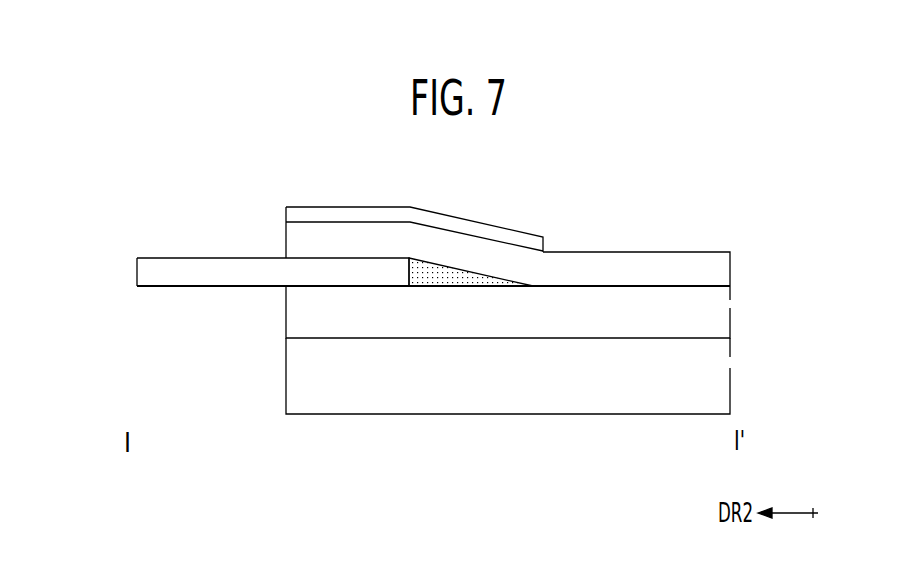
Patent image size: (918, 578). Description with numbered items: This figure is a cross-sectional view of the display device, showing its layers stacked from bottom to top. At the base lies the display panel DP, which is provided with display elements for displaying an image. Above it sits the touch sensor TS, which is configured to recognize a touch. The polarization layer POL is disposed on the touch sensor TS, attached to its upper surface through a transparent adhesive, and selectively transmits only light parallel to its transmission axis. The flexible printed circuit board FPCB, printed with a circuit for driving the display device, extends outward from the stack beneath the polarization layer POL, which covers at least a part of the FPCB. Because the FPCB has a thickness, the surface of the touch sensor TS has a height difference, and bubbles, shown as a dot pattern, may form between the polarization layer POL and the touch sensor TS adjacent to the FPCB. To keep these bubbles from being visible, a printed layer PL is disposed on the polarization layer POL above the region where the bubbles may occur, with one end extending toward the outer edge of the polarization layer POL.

The printed layer PL is at (292, 214).
The flexible printed circuit board FPCB is at (142, 272).
The polarization layer POL is at (730, 271).
The touch sensor TS is at (730, 316).
The display panel DP is at (730, 372).